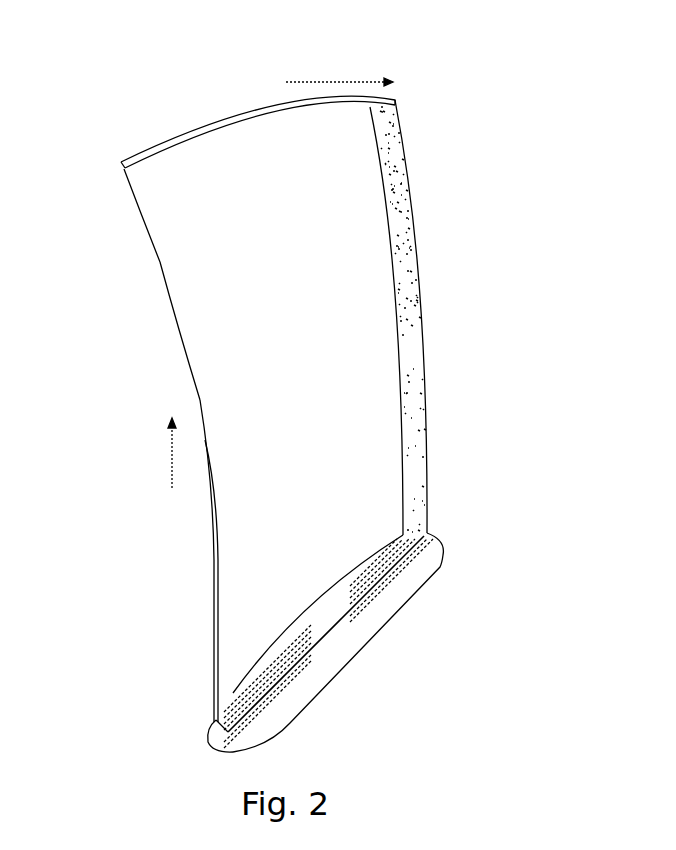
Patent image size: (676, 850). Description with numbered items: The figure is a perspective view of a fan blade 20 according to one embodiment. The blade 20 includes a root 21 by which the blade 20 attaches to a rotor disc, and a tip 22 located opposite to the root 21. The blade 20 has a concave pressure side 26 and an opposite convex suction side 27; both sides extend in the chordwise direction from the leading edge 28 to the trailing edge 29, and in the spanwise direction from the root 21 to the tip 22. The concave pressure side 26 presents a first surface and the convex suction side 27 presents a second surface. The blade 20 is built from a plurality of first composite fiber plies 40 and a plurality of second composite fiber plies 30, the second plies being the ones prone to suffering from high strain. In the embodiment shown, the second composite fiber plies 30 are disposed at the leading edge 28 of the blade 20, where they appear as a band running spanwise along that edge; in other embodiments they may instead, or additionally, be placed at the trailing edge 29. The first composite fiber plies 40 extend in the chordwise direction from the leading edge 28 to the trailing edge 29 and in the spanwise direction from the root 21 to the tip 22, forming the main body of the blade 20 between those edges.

The blade 20 is at (462, 188).
The root 21 is at (233, 692).
The tip 22 is at (257, 117).
The concave pressure side 26 is at (260, 250).
The convex suction side 27 is at (134, 204).
The leading edge 28 is at (423, 309).
The trailing edge 29 is at (166, 272).
The second composite fiber plies 30 is at (420, 400).
The first composite fiber plies 40 is at (212, 343).